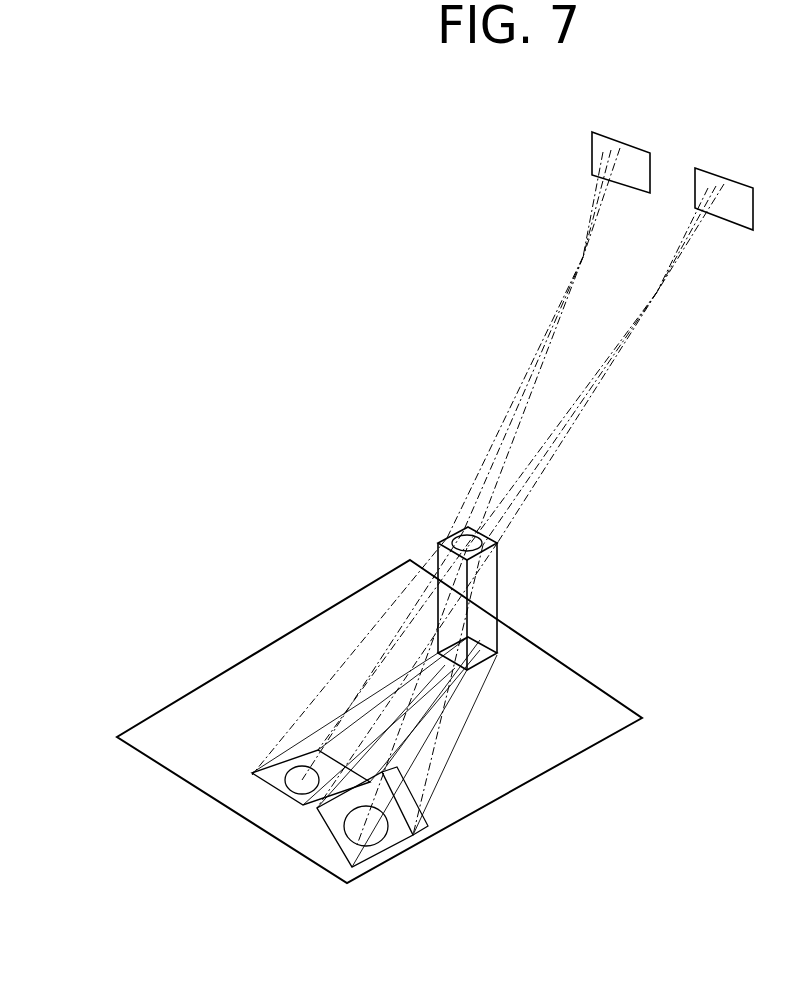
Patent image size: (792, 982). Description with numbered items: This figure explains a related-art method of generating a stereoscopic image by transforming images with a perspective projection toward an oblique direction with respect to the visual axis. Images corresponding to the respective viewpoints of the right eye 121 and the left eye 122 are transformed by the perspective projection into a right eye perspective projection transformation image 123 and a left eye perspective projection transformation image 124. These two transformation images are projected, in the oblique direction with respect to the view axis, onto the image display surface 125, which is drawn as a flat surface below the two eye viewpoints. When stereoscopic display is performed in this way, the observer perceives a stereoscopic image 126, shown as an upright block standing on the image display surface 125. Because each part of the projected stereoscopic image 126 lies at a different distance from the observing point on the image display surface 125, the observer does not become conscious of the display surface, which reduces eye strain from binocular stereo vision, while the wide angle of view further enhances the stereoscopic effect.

The right eye 121 is at (610, 132).
The left eye 122 is at (748, 187).
The right eye perspective projection transformation image 123 is at (448, 765).
The left eye perspective projection transformation image 124 is at (257, 780).
The image display surface 125 is at (567, 683).
The stereoscopic image 126 is at (497, 560).